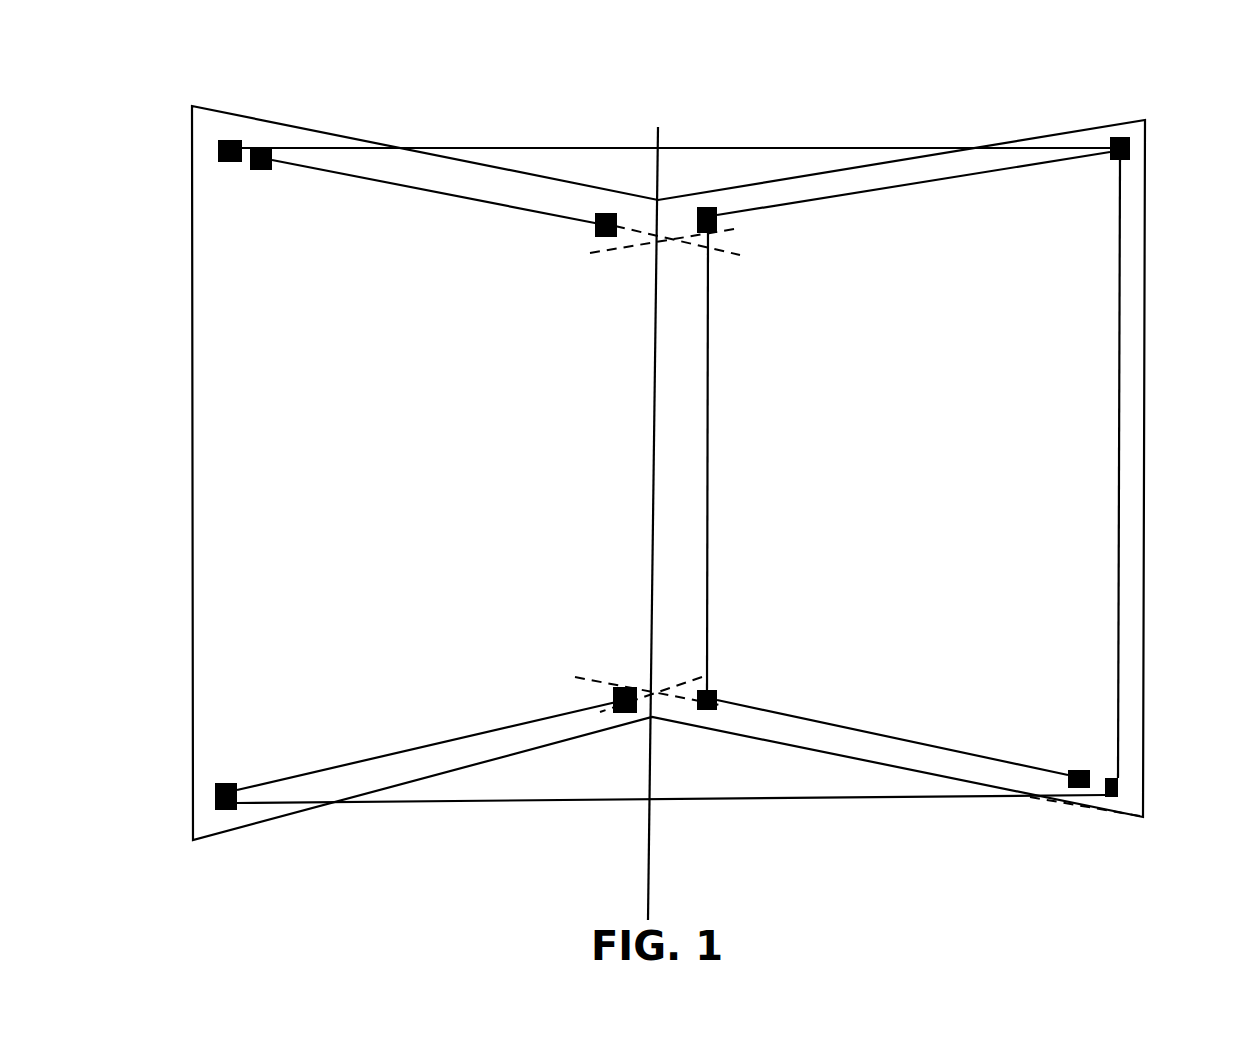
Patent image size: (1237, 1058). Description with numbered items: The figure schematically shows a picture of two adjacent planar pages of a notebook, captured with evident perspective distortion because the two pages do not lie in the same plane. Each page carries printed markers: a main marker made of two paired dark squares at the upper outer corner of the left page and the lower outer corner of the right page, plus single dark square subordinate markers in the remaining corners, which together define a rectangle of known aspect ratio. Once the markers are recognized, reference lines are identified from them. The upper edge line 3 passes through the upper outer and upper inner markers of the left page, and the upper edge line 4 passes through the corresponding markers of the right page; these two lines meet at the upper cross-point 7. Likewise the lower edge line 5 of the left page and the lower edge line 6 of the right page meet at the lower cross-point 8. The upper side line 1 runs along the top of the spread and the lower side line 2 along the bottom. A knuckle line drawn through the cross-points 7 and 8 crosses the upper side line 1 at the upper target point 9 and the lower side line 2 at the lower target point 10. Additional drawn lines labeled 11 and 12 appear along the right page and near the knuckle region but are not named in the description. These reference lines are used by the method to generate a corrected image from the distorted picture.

The upper side line 1 is at (545, 142).
The lower side line 2 is at (532, 803).
The upper edge line 3 is at (432, 201).
The upper edge line 4 is at (885, 203).
The lower edge line 5 is at (433, 732).
The lower edge line 6 is at (912, 737).
The upper cross-point 7 is at (662, 247).
The lower cross-point 8 is at (630, 673).
The upper target point 9 is at (673, 142).
The lower target point 10 is at (658, 817).
The right vertical member 11 is at (1117, 507).
The inner vertical member 12 is at (712, 495).